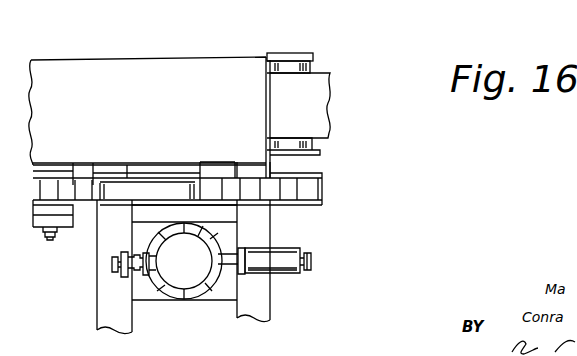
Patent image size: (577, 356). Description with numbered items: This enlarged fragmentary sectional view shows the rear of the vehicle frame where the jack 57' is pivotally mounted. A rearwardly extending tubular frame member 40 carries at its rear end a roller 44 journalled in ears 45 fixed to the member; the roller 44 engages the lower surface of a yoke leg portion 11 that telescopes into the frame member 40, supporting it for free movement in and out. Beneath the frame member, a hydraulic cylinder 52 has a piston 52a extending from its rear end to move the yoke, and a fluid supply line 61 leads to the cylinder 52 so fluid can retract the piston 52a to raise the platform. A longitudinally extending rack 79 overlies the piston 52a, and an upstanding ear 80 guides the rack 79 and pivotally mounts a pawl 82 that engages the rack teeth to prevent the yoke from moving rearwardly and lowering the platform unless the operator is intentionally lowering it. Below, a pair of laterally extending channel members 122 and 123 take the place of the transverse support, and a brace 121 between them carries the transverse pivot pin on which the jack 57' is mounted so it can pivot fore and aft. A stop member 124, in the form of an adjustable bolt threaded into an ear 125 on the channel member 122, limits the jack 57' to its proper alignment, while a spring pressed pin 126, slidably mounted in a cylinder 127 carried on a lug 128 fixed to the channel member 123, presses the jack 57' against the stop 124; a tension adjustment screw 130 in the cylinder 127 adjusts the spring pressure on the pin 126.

The tubular frame member 40 is at (160, 89).
The ear 45 is at (306, 54).
The roller 44 is at (310, 68).
The plate 11 is at (306, 110).
The rack 79 is at (312, 185).
The pawl 82 is at (108, 187).
The upstanding ear 80 is at (207, 182).
The hydraulic cylinder 52 is at (43, 220).
The fluid supply line 61 is at (53, 236).
The channel member 122 is at (103, 316).
The channel member 123 is at (265, 290).
The brace 121 is at (148, 224).
The spring pressed pin 126 is at (220, 262).
The jack 57' is at (172, 283).
The stop member 124 is at (116, 266).
The ear 125 is at (125, 253).
The lug 128 is at (241, 258).
The cylinder 127 is at (280, 253).
The tension adjustment screw 130 is at (312, 259).
The piston 52a is at (322, 204).